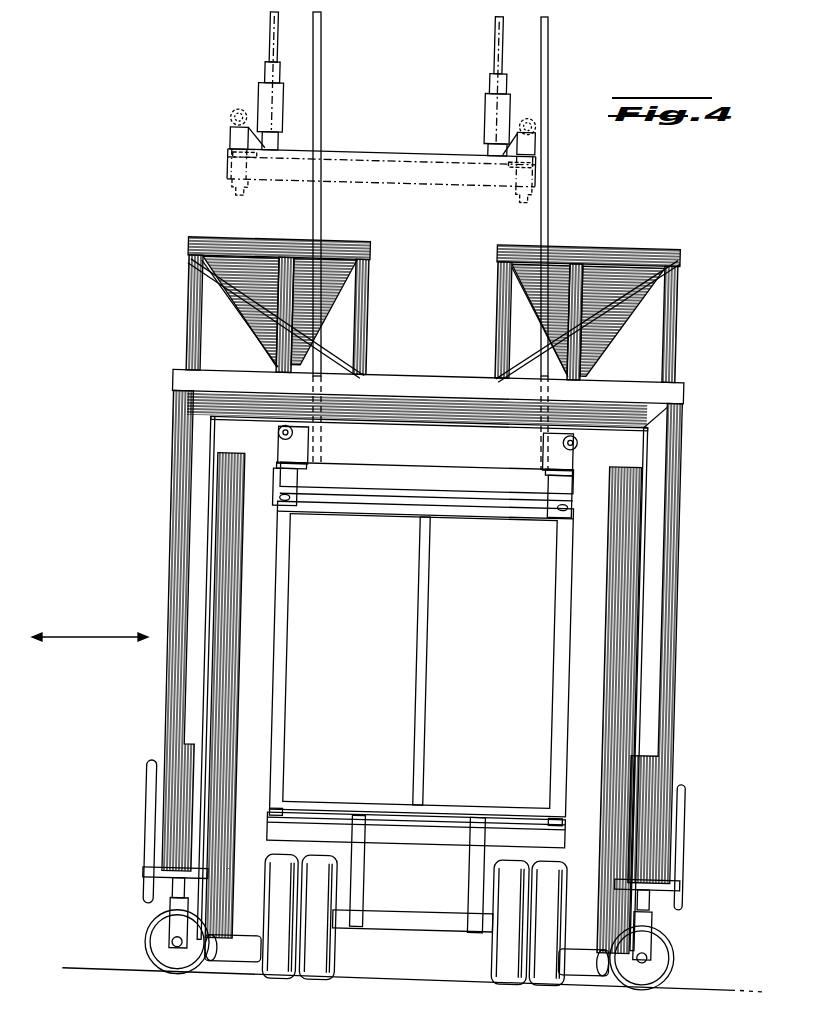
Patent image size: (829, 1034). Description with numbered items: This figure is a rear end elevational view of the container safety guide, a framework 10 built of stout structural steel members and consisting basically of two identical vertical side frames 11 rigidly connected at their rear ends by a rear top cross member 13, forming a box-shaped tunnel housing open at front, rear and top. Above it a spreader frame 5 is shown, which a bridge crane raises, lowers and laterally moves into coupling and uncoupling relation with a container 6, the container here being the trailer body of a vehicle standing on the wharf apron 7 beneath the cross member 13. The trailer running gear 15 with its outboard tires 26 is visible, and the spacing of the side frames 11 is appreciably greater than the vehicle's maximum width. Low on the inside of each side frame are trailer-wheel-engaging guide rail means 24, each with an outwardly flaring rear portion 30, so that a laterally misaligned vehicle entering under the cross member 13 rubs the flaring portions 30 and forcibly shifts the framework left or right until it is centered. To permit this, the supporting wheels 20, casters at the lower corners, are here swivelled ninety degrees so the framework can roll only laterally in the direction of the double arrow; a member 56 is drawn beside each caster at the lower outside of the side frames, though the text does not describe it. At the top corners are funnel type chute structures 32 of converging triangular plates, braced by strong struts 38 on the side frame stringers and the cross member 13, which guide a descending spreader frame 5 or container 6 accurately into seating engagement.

The spreader frame 5 is at (378, 150).
The container 6 is at (497, 619).
The wharf apron 7 is at (420, 990).
The framework 10 is at (158, 427).
The vertical side frames 11 is at (172, 515).
The rear top cross member 13 is at (425, 376).
The trailer running gear 15 is at (330, 977).
The supporting wheels 20 is at (152, 945).
The guide rail means 24 is at (240, 962).
The outboard tires 26 is at (277, 862).
The outwardly flaring rear portion 30 is at (243, 940).
The funnel type chute structures 32 is at (184, 245).
The struts 38 is at (186, 320).
The guide rod 56 is at (147, 800).